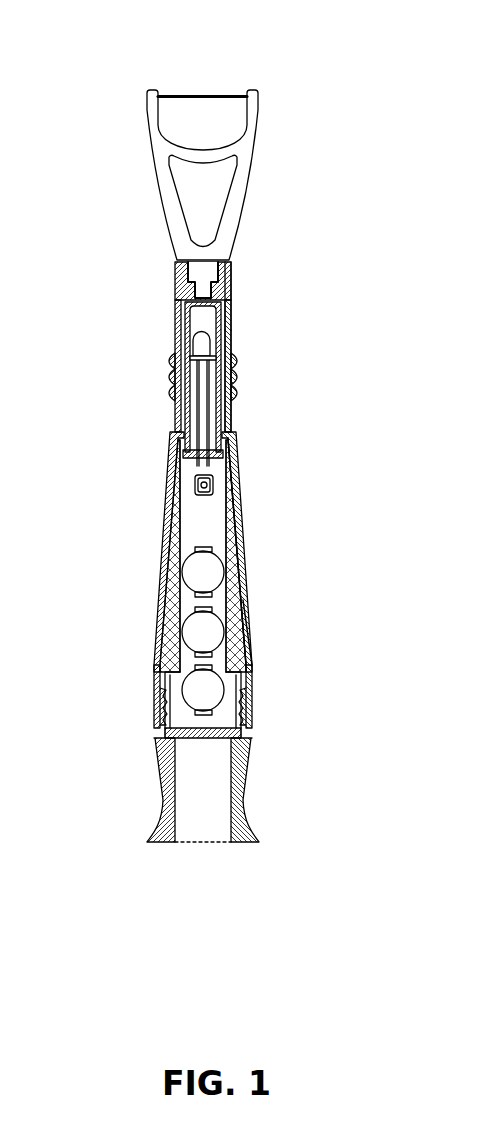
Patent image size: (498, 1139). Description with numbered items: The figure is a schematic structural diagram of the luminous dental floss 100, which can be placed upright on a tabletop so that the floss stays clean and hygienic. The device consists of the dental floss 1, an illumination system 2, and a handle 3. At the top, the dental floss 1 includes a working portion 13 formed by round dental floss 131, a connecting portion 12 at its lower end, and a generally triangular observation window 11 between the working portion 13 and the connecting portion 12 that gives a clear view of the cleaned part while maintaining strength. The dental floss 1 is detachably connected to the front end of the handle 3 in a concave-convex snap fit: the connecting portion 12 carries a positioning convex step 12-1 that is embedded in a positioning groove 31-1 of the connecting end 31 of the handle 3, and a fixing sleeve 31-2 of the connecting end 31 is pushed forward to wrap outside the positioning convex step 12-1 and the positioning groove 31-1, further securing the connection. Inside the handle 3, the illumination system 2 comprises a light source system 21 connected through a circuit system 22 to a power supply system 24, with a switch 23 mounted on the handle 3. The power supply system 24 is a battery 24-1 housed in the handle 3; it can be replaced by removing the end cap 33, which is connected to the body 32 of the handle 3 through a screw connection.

The dental floss 1 is at (245, 145).
The observation window 11 is at (200, 208).
The connecting portion 12 is at (227, 263).
The positioning convex step 12-1 is at (183, 277).
The working portion 13 is at (180, 90).
The round dental floss 131 is at (185, 94).
The illumination system 2 is at (130, 458).
The light source system 21 is at (178, 333).
The circuit system 22 is at (182, 437).
The switch 23 is at (188, 490).
The power supply system 24 is at (245, 565).
The battery 24-1 is at (250, 633).
The handle 3 is at (237, 458).
The connecting end 31 is at (170, 378).
The positioning groove 31-1 is at (228, 292).
The fixing sleeve 31-2 is at (230, 345).
The body 32 is at (242, 537).
The end cap 33 is at (253, 712).
The luminous dental floss 100 is at (157, 712).